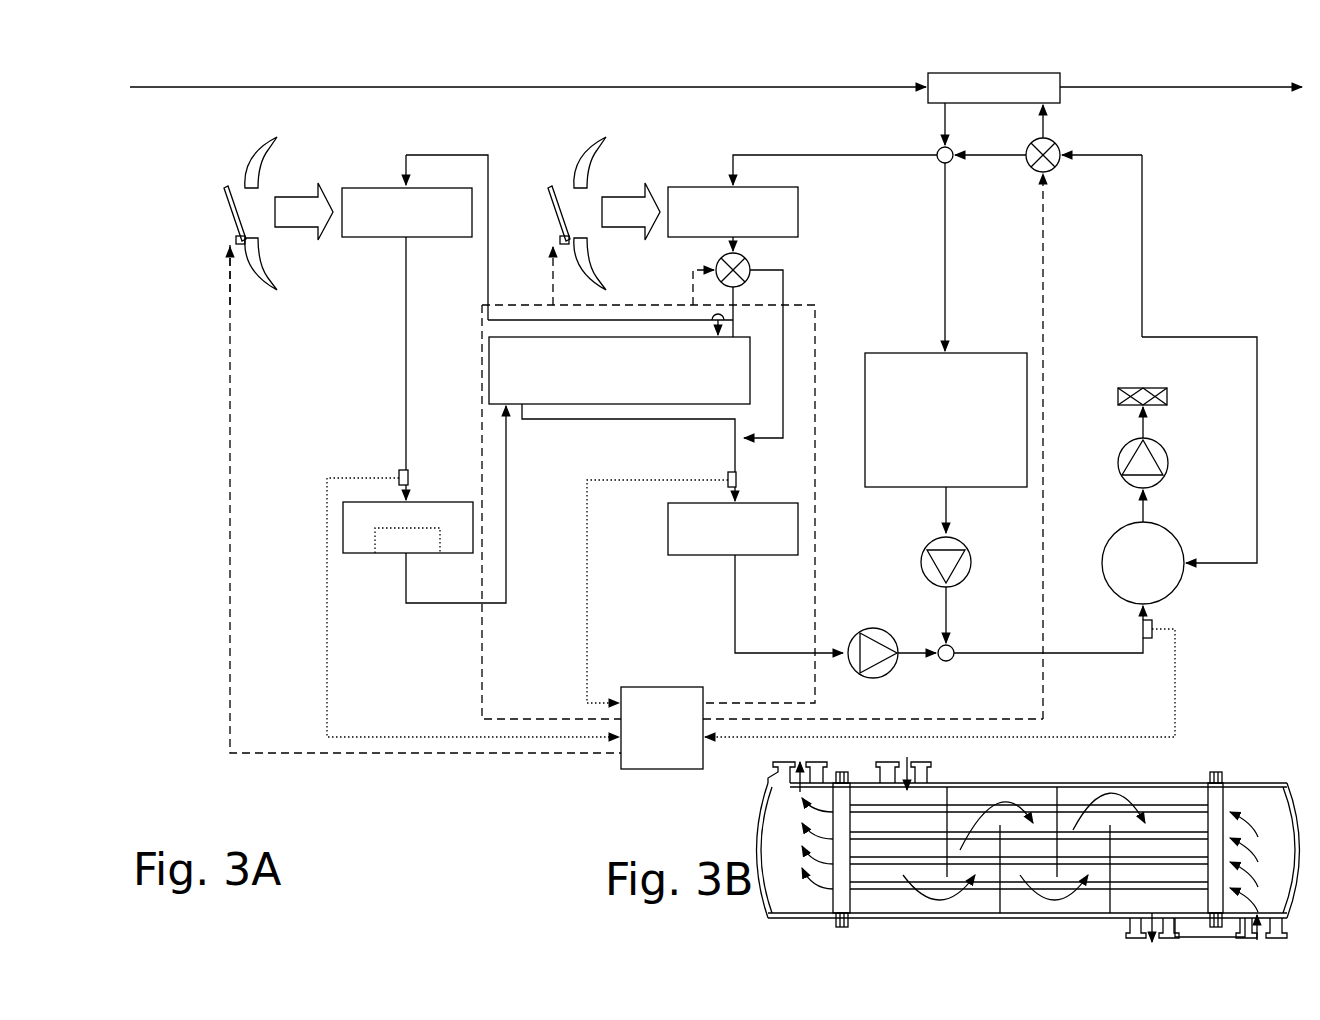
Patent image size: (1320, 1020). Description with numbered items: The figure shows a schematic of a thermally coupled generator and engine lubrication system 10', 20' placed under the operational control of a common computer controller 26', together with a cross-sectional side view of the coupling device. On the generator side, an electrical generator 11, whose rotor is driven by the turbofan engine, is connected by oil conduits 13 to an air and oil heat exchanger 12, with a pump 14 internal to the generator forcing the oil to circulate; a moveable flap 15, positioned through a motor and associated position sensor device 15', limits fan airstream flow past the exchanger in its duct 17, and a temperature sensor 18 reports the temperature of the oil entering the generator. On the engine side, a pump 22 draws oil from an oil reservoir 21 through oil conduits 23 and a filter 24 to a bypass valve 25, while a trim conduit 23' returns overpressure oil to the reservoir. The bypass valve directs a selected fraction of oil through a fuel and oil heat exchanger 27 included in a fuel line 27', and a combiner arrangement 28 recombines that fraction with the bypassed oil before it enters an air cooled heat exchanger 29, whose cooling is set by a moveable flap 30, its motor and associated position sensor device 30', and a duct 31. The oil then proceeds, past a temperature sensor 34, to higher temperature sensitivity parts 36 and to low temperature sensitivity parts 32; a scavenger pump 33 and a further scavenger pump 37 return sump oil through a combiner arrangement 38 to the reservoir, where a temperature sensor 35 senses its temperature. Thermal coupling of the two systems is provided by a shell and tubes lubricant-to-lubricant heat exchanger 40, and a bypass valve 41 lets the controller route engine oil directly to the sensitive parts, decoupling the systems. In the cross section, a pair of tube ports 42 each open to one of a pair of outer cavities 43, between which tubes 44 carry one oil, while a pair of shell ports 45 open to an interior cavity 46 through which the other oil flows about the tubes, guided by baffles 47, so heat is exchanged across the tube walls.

In FIG. 3A, the generator lubrication system 10' is at (327, 806).
In FIG. 3A, the engine lubrication system 20' is at (327, 806).
In FIG. 3A, the electrical generator 11 is at (448, 501).
In FIG. 3A, the air and oil heat exchanger 12 is at (440, 238).
In FIG. 3A, the oil conduits 13 is at (488, 297).
In FIG. 3A, the pump 14 is at (390, 553).
In FIG. 3A, the moveable flap 15 is at (202, 213).
In FIG. 3A, the motor and associated position sensor device 15' is at (205, 264).
In FIG. 3A, the duct 17 is at (262, 159).
In FIG. 3A, the temperature sensor 18 is at (400, 471).
In FIG. 3A, the oil reservoir 21 is at (1172, 593).
In FIG. 3A, the pump 22 is at (1158, 484).
In FIG. 3A, the oil conduits 23 is at (854, 378).
In FIG. 3A, the trim conduit 23' is at (1199, 434).
In FIG. 3A, the filter 24 is at (1160, 388).
In FIG. 3A, the bypass valve 25 is at (1053, 141).
In FIG. 3A, the common computer controller 26' is at (466, 507).
In FIG. 3A, the fuel and oil heat exchanger 27 is at (956, 94).
In FIG. 3A, the fuel line 27' is at (716, 72).
In FIG. 3A, the combiner arrangement 28 is at (940, 149).
In FIG. 3A, the air cooled heat exchanger 29 is at (798, 219).
In FIG. 3A, the moveable flap 30 is at (536, 213).
In FIG. 3A, the motor and associated position sensor device 30' is at (538, 267).
In FIG. 3A, the duct 31 is at (591, 159).
In FIG. 3A, the low temperature sensitivity parts 32 is at (880, 353).
In FIG. 3A, the scavenger pump 33 is at (968, 556).
In FIG. 3A, the temperature sensor 34 is at (728, 473).
In FIG. 3A, the temperature sensor 35 is at (1153, 640).
In FIG. 3A, the higher temperature sensitivity parts 36 is at (760, 503).
In FIG. 3A, the scavenger pump 37 is at (870, 628).
In FIG. 3A, the combiner arrangement 38 is at (953, 650).
In FIG. 3A, the shell and tubes lubricant-to-lubricant heat exchanger 40 is at (738, 337).
In FIG. 3B, the shell and tubes lubricant-to-lubricant heat exchanger 40 is at (1140, 783).
In FIG. 3A, the bypass valve 41 is at (747, 263).
In FIG. 3B, the tube ports 42 is at (775, 763).
In FIG. 3B, the outer cavities 43 is at (778, 830).
In FIG. 3B, the tubes 44 is at (1062, 855).
In FIG. 3B, the shell ports 45 is at (925, 765).
In FIG. 3B, the interior cavity 46 is at (953, 800).
In FIG. 3B, the baffles 47 is at (1033, 820).